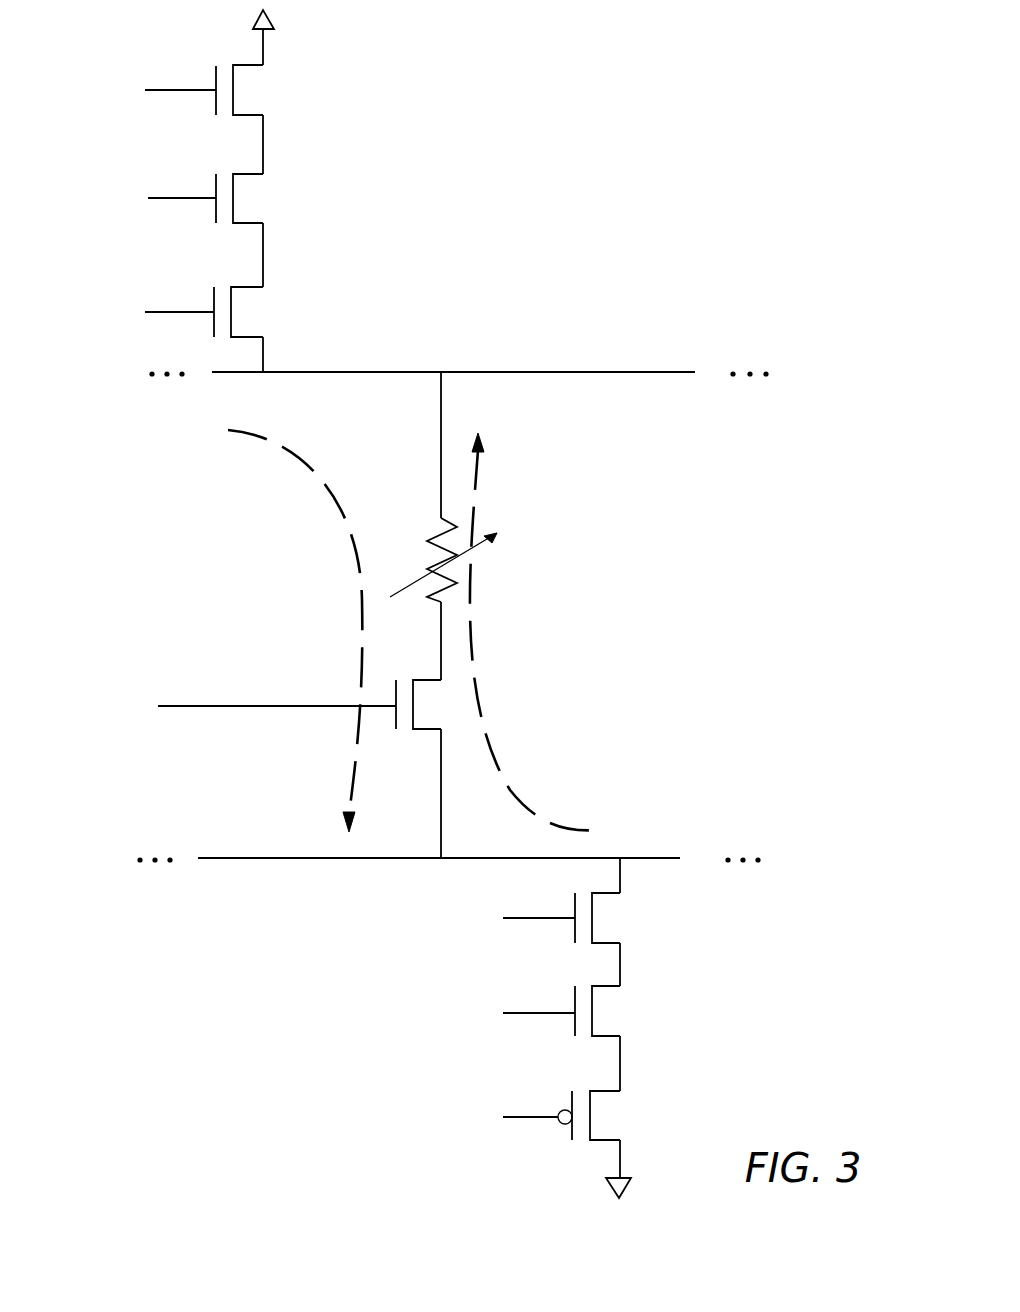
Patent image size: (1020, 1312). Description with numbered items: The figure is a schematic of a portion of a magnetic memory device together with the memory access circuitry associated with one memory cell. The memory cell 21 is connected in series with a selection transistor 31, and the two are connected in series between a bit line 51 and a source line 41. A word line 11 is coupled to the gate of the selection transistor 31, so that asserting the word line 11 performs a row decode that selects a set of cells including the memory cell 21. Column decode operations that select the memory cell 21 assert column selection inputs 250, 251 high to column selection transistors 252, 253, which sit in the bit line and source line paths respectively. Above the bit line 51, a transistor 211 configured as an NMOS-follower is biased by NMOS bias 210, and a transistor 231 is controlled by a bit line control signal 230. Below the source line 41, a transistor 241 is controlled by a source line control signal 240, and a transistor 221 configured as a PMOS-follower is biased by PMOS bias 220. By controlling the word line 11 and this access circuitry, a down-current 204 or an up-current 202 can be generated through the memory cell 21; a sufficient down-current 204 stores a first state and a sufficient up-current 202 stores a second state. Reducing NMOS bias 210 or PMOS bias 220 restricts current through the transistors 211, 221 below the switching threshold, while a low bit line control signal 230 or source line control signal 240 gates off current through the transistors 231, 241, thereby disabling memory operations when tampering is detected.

The transistor 211 is at (258, 90).
The NMOS bias 210 is at (143, 84).
The transistor 231 is at (258, 199).
The bit line control signal 230 is at (130, 197).
The column selection transistor 252 is at (257, 312).
The column selection input 250 is at (120, 301).
The bit line 51 is at (563, 369).
The memory cell 21 is at (428, 535).
The selection transistor 31 is at (392, 727).
The word line 11 is at (242, 708).
The down-current 204 is at (345, 573).
The up-current 202 is at (472, 620).
The source line 41 is at (297, 870).
The column selection transistor 253 is at (618, 918).
The column selection input 251 is at (477, 912).
The transistor 241 is at (618, 1010).
The source line control signal 240 is at (468, 1020).
The transistor 221 is at (615, 1115).
The PMOS bias 220 is at (492, 1132).